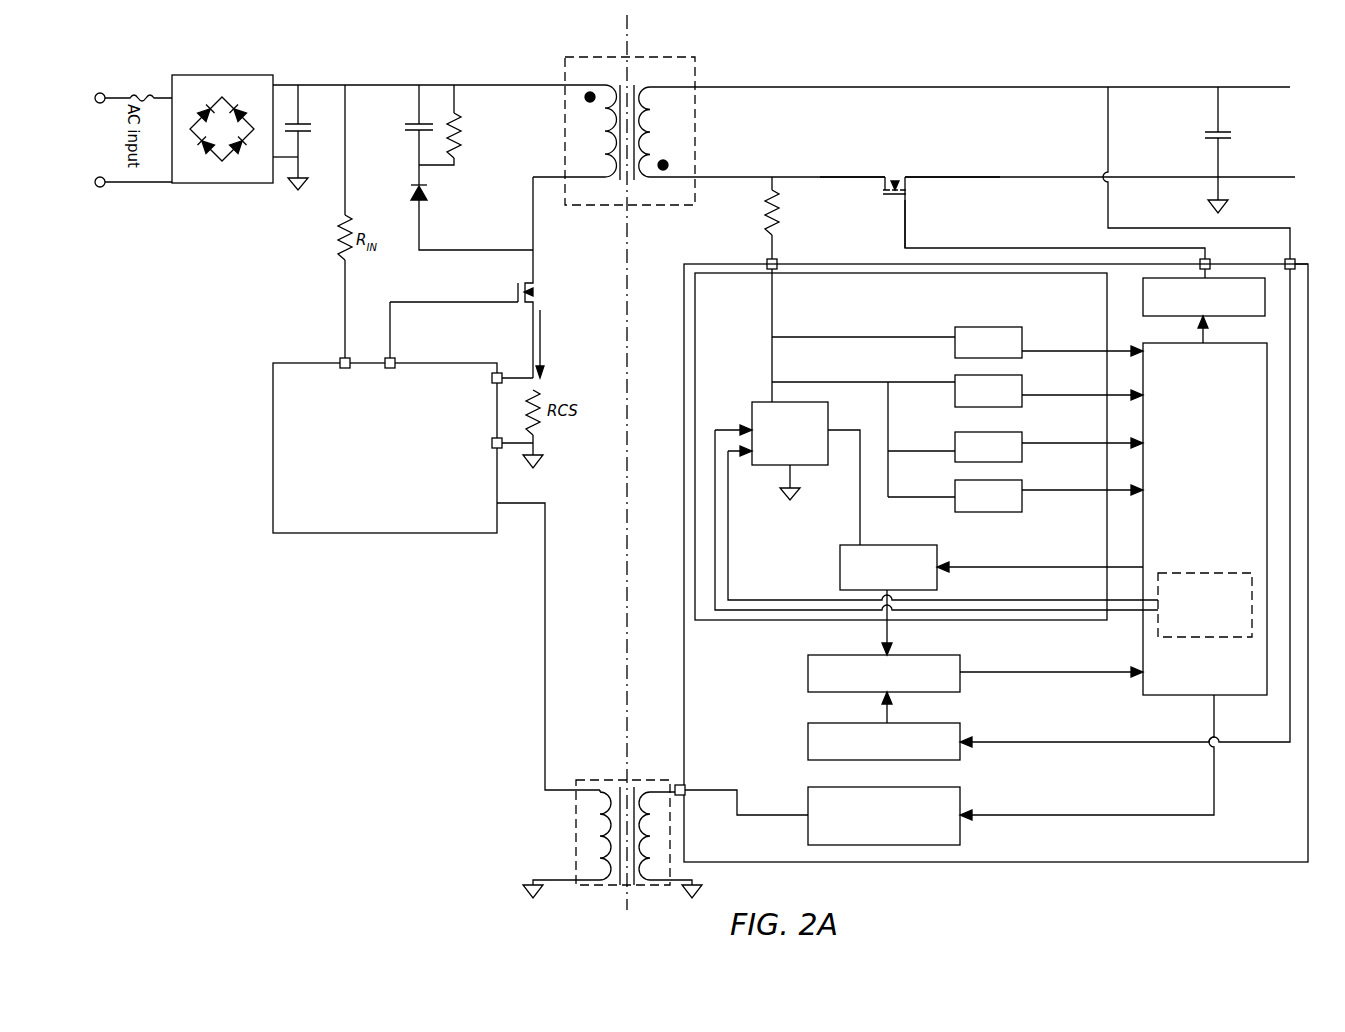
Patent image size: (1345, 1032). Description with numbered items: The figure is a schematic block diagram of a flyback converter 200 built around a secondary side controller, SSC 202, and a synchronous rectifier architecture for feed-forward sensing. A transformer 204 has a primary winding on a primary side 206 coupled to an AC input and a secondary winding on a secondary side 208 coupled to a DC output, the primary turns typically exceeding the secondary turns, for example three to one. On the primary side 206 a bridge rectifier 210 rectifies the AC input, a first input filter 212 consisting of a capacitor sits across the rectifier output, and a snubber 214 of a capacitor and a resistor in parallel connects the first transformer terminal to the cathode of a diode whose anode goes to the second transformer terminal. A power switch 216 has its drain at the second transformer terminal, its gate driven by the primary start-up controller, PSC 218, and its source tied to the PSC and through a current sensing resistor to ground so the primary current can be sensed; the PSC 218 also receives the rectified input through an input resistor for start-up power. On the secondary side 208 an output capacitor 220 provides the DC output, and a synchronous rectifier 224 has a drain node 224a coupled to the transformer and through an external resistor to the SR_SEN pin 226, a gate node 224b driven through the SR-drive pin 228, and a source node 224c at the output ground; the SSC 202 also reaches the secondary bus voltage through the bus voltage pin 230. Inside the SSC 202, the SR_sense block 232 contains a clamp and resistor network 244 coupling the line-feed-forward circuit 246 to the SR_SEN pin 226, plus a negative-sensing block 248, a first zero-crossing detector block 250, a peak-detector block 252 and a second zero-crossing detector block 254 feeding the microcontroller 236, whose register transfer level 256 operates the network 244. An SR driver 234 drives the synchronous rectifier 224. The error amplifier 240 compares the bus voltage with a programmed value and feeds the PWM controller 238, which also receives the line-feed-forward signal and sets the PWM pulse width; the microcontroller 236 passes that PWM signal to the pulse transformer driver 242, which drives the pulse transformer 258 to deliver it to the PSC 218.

The flyback converter 200 is at (790, 104).
The secondary side controller 202 is at (996, 563).
The transformer 204 is at (605, 134).
The primary side 206 is at (577, 162).
The secondary side 208 is at (658, 163).
The bridge rectifier 210 is at (223, 75).
The first input filter 212 is at (300, 70).
The snubber 214 is at (435, 65).
The power switch 216 is at (505, 292).
The primary start-up controller 218 is at (436, 546).
The output capacitor 220 is at (1222, 130).
The synchronous rectifier 224 is at (893, 165).
The drain node 224a is at (859, 177).
The gate node 224b is at (905, 228).
The source node 224c is at (962, 177).
The SR_SEN pin 226 is at (766, 259).
The SR-drive pin 228 is at (1208, 262).
The V_BUS pin 230 is at (1294, 258).
The SR_sense block 232 is at (926, 462).
The SR driver 234 is at (1204, 310).
The microcontroller 236 is at (1125, 544).
The PWM controller 238 is at (935, 650).
The error amplifier 240 is at (933, 718).
The pulse transformer driver 242 is at (940, 783).
The clamp and resistor network 244 is at (806, 473).
The line-feed-forward circuit 246 is at (991, 600).
The negative-sensing block 248 is at (988, 391).
The first zero-crossing detector block 250 is at (988, 447).
The peak-detector block 252 is at (988, 342).
The second zero-crossing detector block 254 is at (988, 496).
The register transfer level 256 is at (1205, 605).
The pulse transformer 258 is at (588, 780).